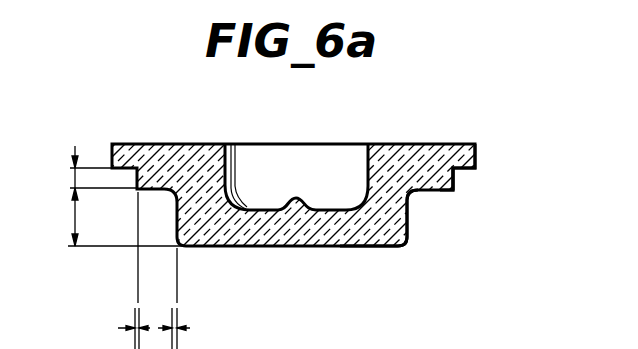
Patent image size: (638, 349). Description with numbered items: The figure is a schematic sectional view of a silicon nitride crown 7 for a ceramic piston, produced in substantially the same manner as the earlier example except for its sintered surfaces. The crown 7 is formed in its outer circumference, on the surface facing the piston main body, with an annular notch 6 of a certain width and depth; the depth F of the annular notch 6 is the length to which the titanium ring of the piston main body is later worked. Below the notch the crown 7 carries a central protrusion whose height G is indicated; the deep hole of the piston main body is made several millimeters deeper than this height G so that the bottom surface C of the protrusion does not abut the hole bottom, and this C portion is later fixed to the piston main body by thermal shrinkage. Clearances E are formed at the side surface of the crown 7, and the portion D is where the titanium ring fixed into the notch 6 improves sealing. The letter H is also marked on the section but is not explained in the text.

The crown 7 is at (403, 145).
The annular notch 6 is at (455, 178).
The bottom surface of the protrusion C is at (363, 248).
The sealing portion D is at (456, 190).
The height dimension H is at (438, 191).
The depth of the annular notch F is at (91, 196).
The height of the protrusion G is at (115, 227).
The clearances E is at (180, 328).